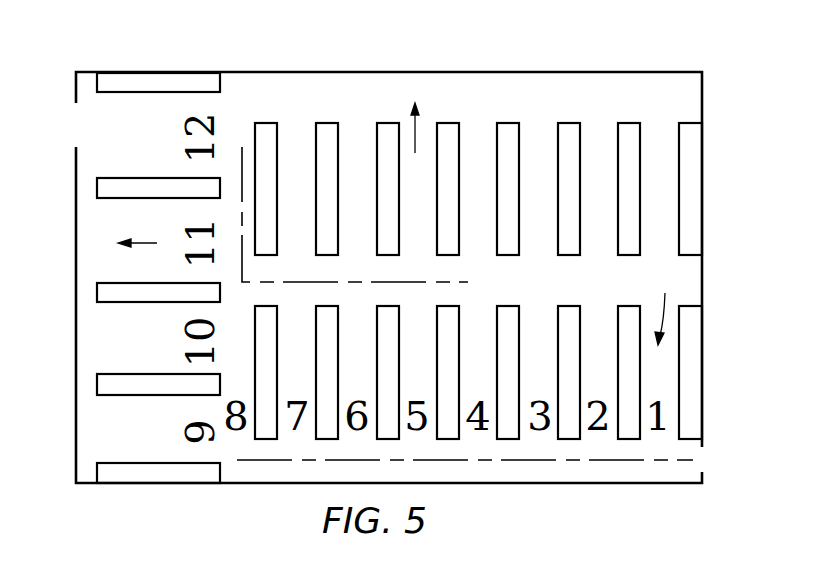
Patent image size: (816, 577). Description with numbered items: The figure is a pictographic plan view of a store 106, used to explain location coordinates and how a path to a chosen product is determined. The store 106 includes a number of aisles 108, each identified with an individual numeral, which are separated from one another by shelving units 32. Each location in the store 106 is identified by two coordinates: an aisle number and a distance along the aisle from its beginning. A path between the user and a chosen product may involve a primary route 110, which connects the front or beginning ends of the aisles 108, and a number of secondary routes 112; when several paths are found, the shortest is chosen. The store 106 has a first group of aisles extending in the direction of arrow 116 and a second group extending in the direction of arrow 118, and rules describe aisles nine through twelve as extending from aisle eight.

The shelving unit 32 is at (617, 319).
The store 106 is at (75, 441).
The aisle 108 is at (672, 308).
The primary route 110 is at (443, 461).
The secondary route 112 is at (468, 283).
The arrow 116 is at (142, 243).
The arrow 118 is at (418, 128).